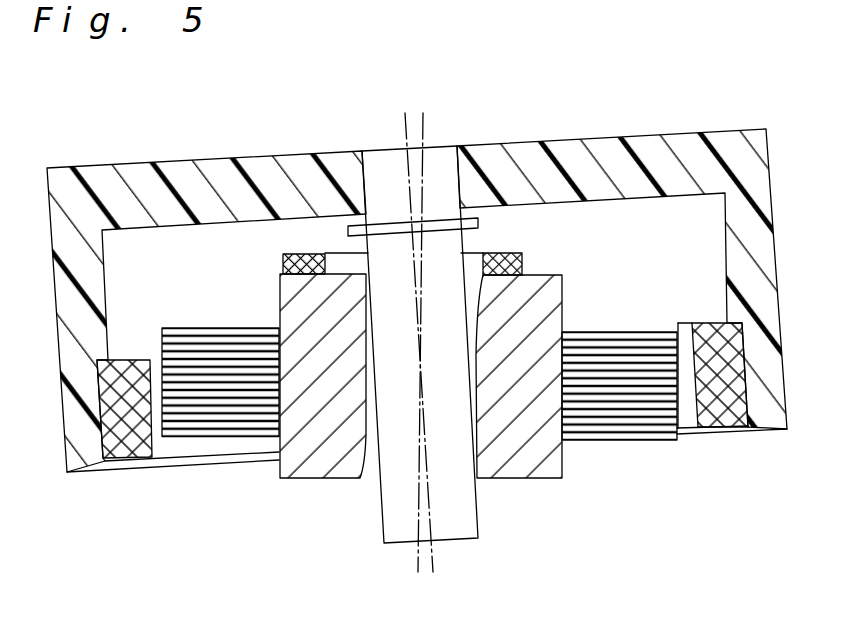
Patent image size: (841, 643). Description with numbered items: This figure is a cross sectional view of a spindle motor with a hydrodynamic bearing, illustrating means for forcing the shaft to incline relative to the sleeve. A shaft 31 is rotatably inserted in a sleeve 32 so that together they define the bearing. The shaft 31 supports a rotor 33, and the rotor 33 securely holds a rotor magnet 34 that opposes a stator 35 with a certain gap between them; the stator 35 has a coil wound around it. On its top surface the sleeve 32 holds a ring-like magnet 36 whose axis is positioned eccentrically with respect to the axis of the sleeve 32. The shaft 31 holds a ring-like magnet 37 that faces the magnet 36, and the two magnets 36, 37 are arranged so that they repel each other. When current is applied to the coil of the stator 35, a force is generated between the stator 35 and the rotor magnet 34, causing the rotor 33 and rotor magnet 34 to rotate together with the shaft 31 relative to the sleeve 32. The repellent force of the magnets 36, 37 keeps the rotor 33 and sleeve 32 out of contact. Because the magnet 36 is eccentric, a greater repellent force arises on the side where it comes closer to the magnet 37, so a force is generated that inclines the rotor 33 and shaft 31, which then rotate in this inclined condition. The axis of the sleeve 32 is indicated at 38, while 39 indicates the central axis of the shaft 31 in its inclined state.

The shaft 31 is at (440, 160).
The sleeve 32 is at (533, 280).
The rotor 33 is at (612, 150).
The rotor magnet 34 is at (722, 403).
The stator 35 is at (630, 408).
The ring-like magnet 36 is at (293, 253).
The ring-like magnet 37 is at (384, 226).
The axis of the sleeve 38 is at (418, 572).
The central axis of the shaft 39 is at (434, 572).